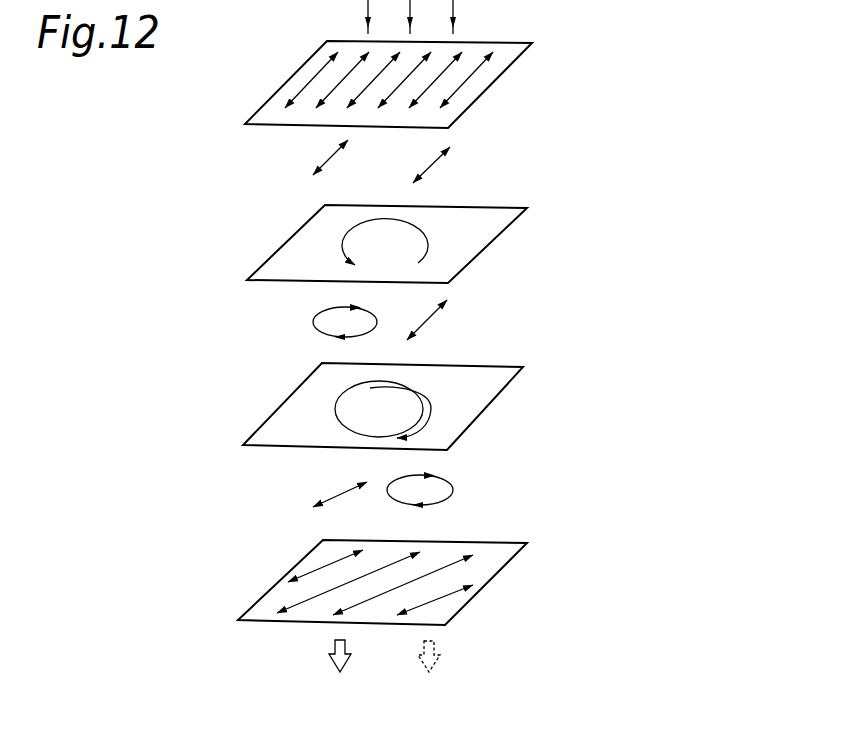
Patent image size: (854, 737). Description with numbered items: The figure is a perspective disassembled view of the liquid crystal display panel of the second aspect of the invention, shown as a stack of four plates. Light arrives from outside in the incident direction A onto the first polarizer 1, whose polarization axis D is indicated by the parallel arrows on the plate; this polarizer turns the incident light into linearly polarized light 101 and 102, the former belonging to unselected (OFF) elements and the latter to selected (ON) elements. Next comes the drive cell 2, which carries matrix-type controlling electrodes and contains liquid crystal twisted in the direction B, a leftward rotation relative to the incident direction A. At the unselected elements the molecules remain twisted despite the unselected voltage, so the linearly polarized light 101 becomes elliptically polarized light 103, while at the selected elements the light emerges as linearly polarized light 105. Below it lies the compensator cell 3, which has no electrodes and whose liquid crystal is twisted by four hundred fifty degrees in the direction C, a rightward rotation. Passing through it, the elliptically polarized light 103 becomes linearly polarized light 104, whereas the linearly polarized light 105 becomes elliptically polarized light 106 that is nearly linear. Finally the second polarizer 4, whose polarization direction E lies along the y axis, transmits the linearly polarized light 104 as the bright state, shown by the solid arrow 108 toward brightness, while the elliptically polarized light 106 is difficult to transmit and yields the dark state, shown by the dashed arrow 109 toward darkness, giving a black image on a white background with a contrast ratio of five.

The light incident direction A is at (453, 12).
The first polarizer 1 is at (500, 77).
The polarization axis D is at (467, 83).
The linearly polarized light 101 is at (330, 157).
The linearly polarized light 102 is at (450, 152).
The drive cell 2 is at (497, 237).
The twist direction B is at (418, 263).
The elliptically polarized light 103 is at (312, 320).
The linearly polarized light 105 is at (430, 317).
The compensator cell 3 is at (493, 400).
The twist direction C is at (430, 417).
The linearly polarized light 104 is at (342, 495).
The elliptically polarized light 106 is at (455, 490).
The second polarizer 4 is at (500, 570).
The polarization direction E is at (460, 588).
The transmitted light (brightness) 108 is at (332, 651).
The blocked light (darkness) 109 is at (440, 653).